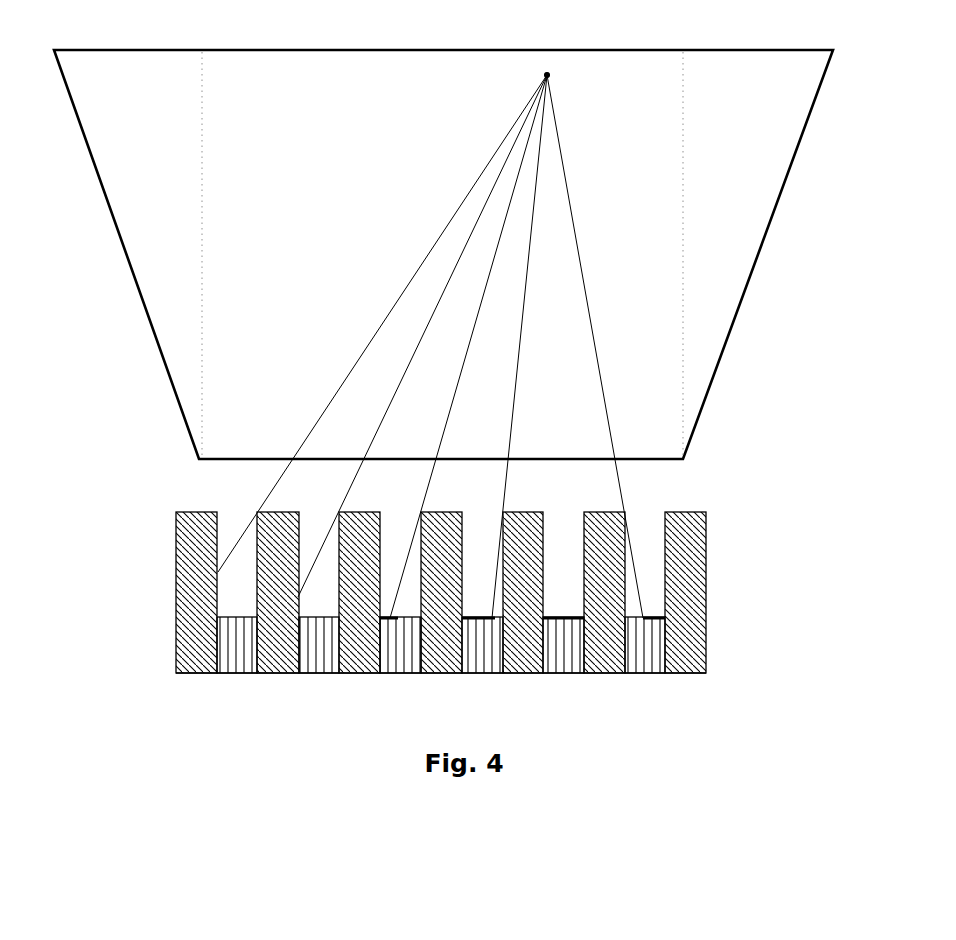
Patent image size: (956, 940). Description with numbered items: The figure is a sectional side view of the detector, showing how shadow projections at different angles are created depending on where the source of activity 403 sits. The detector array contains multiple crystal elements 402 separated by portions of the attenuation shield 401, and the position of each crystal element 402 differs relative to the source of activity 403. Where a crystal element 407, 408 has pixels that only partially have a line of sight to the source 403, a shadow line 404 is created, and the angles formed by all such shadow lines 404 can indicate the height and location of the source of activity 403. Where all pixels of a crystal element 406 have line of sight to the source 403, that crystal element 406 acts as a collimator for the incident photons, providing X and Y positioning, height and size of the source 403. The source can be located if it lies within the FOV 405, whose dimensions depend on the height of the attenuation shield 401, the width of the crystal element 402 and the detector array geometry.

The attenuation shield 401 is at (677, 512).
The crystal element 402 is at (565, 655).
The source of activity 403 is at (552, 74).
The shadow line 404 is at (575, 238).
The FOV 405 is at (172, 372).
The crystal element acting as collimator 406 is at (557, 617).
The crystal element with partial line of sight 407 is at (472, 617).
The crystal element with partial line of sight 408 is at (410, 617).